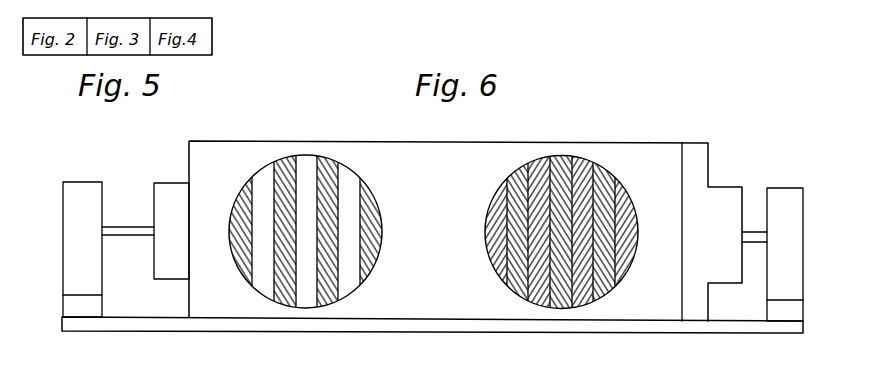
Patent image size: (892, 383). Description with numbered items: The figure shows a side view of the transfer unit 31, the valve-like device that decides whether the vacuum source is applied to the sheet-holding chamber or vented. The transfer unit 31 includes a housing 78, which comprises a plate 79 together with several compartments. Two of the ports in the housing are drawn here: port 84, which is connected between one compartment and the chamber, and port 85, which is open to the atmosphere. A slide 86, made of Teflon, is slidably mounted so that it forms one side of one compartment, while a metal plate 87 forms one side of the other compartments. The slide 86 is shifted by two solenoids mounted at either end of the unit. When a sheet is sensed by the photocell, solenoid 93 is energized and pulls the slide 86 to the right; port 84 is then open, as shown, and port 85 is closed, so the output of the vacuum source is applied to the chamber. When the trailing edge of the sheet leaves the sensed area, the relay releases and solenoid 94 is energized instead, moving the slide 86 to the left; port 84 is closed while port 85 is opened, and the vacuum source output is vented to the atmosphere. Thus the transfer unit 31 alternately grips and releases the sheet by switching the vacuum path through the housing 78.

In FIG. 6, the transfer unit 31 is at (761, 121).
In FIG. 5, the housing 78 is at (465, 216).
In FIG. 6, the plate 79 is at (669, 334).
In FIG. 5, the port 84 is at (308, 232).
In FIG. 6, the port 85 is at (559, 234).
In FIG. 5, the slide 86 is at (167, 183).
In FIG. 6, the slide 86 is at (562, 234).
In FIG. 5, the metal plate 87 is at (330, 160).
In FIG. 6, the metal plate 87 is at (578, 297).
In FIG. 6, the solenoid 93 is at (805, 228).
In FIG. 5, the solenoid 94 is at (63, 228).